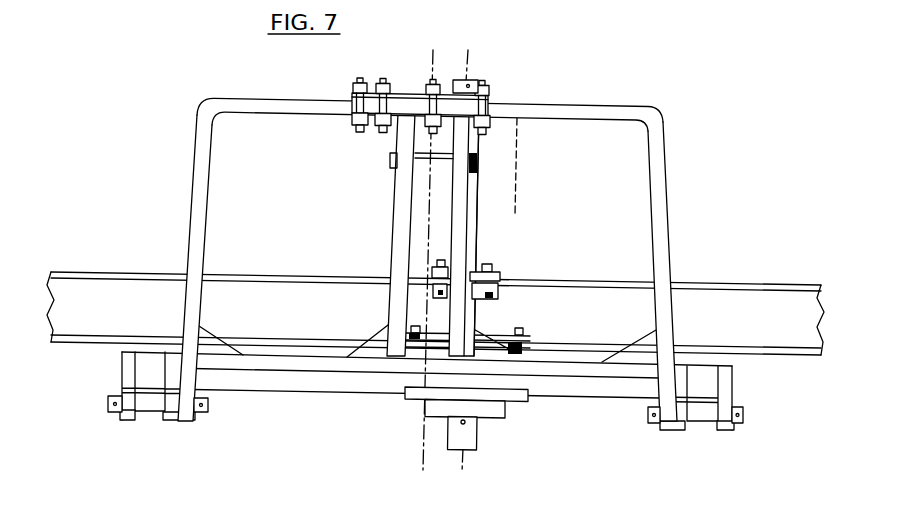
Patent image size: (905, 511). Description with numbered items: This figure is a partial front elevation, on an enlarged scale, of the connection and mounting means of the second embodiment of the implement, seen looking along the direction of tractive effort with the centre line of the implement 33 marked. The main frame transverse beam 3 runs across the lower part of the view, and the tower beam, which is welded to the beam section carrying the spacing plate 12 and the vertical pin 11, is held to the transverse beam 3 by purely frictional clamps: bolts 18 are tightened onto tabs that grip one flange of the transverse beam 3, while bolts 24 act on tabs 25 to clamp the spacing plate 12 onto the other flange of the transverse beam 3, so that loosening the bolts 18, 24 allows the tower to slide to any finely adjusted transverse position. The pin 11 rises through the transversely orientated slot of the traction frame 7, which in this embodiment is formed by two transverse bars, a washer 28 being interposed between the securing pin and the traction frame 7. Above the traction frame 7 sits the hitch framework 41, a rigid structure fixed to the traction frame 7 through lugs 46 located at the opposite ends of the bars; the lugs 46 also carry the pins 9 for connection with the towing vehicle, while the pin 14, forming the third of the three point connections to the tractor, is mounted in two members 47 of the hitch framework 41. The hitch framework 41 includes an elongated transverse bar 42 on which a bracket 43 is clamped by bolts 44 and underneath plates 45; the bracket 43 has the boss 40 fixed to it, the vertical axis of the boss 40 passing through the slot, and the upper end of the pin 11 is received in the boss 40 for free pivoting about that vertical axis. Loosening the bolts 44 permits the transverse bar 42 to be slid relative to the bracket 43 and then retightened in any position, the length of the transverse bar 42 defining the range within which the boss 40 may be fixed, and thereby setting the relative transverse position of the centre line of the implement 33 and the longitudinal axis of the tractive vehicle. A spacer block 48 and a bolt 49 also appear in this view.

The transverse beam 3 is at (123, 297).
The traction frame 7 is at (572, 393).
The pin 9 is at (148, 406).
The pin 11 is at (475, 226).
The spacing plate 12 is at (387, 404).
The pin 14 is at (428, 163).
The bolt 18 is at (432, 272).
The bolt 24 is at (412, 327).
The tab 25 is at (499, 333).
The washer 28 is at (482, 408).
The centre line of the implement 33 is at (519, 162).
The boss 40 is at (477, 84).
The hitch framework 41 is at (665, 180).
The transverse bar 42 is at (581, 109).
The bracket 43 is at (413, 108).
The bolt 44 is at (481, 112).
The underneath plate 45 is at (350, 118).
The lug 46 is at (128, 410).
The member 47 is at (405, 228).
The spacer block 48 is at (413, 400).
The bolt 49 is at (472, 293).